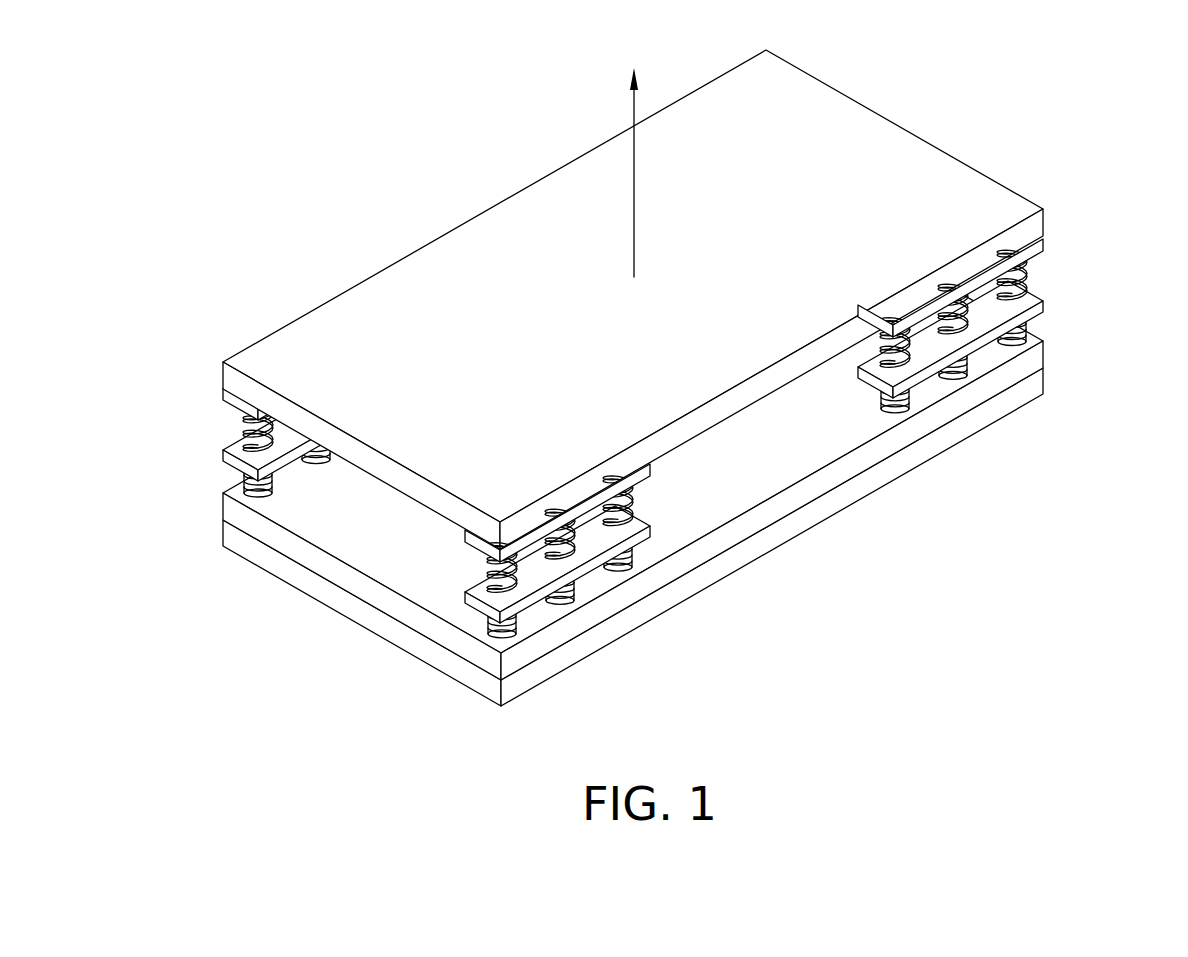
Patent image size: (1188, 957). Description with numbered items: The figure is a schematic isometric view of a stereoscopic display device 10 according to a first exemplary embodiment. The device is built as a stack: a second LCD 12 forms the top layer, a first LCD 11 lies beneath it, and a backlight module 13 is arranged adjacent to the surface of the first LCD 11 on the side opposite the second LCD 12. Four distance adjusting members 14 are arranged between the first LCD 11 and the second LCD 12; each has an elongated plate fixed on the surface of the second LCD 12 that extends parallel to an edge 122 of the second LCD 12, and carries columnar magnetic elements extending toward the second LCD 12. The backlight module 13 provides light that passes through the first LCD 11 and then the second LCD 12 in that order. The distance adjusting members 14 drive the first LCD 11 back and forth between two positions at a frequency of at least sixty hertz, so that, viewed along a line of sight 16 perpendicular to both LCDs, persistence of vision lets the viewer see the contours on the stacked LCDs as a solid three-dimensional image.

The stereoscopic display device 10 is at (322, 142).
The first LCD 11 is at (377, 599).
The second LCD 12 is at (689, 299).
The edge of the second LCD 122 is at (1028, 228).
The backlight module 13 is at (440, 655).
The distance adjusting member 14 is at (590, 565).
The line of sight 16 is at (637, 159).